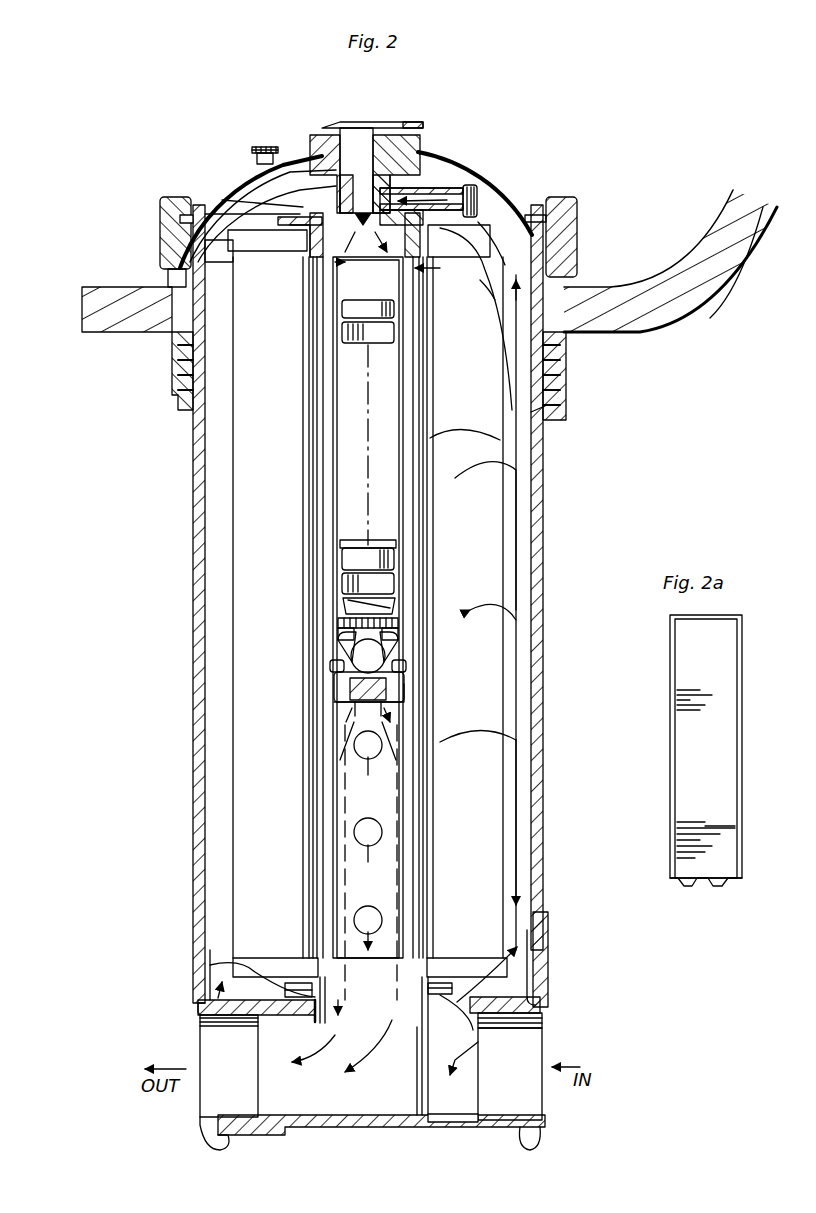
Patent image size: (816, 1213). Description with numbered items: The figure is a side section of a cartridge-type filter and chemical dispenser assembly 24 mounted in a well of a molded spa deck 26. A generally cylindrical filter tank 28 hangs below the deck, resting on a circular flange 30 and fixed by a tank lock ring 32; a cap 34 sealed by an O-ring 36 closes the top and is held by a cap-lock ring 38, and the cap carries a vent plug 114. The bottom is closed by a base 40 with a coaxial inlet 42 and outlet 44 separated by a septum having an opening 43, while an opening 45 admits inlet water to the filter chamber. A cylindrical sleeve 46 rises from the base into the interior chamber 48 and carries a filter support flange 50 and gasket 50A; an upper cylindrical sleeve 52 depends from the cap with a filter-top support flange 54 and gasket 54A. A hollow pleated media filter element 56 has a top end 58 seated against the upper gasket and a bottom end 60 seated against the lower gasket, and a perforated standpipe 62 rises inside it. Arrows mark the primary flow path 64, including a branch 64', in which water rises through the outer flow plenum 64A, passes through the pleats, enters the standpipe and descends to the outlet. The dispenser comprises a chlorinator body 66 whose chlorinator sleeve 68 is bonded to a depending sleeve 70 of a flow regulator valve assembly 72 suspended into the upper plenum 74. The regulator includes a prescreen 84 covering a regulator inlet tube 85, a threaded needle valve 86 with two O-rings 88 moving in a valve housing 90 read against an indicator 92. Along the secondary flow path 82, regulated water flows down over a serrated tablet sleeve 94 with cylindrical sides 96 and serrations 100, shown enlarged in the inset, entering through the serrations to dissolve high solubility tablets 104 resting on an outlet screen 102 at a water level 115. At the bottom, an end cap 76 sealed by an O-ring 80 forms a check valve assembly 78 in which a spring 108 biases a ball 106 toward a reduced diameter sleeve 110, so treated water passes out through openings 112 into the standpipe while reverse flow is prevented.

In FIG. 2, the cartridge-type filter and chemical dispenser assembly 24 is at (178, 758).
In FIG. 2, the molded spa deck 26 is at (722, 236).
In FIG. 2, the filter tank 28 is at (543, 522).
In FIG. 2, the circular flange 30 is at (172, 288).
In FIG. 2, the tank lock ring 32 is at (172, 352).
In FIG. 2, the cap 34 is at (316, 150).
In FIG. 2, the O-ring 36 is at (556, 232).
In FIG. 2, the cap-lock ring 38 is at (160, 230).
In FIG. 2, the base 40 is at (548, 945).
In FIG. 2, the inlet 42 is at (542, 1108).
In FIG. 2, the opening 43 is at (417, 1092).
In FIG. 2, the outlet 44 is at (212, 1088).
In FIG. 2, the opening 45 is at (542, 1022).
In FIG. 2, the circularly cylindrical sleeve 46 is at (315, 945).
In FIG. 2, the interior chamber 48 is at (212, 800).
In FIG. 2, the filter support flange 50 is at (468, 1015).
In FIG. 2, the gasket 50A is at (440, 978).
In FIG. 2, the upper circular cylindrical sleeve 52 is at (305, 262).
In FIG. 2, the filter-top support flange 54 is at (290, 206).
In FIG. 2, the gasket 54A is at (215, 256).
In FIG. 2, the pleated media filter element 56 is at (503, 840).
In FIG. 2, the top end 58 is at (292, 254).
In FIG. 2, the bottom end 60 is at (235, 968).
In FIG. 2, the standpipe 62 is at (420, 882).
In FIG. 2, the primary flow path 64 is at (399, 667).
In FIG. 2, the flow passage 64' is at (459, 304).
In FIG. 2, the outer flow plenum 64A is at (548, 410).
In FIG. 2, the chlorinator body 66 is at (442, 267).
In FIG. 2, the chlorinator sleeve 68 is at (408, 395).
In FIG. 2, the depending sleeve 70 is at (228, 192).
In FIG. 2, the flow regulator valve assembly 72 is at (428, 190).
In FIG. 2, the upper plenum 74 is at (480, 205).
In FIG. 2, the end cap 76 is at (350, 685).
In FIG. 2, the check valve assembly 78 is at (400, 658).
In FIG. 2, the O-ring 80 is at (406, 670).
In FIG. 2, the secondary flow path 82 is at (283, 768).
In FIG. 2, the water treatment prescreen 84 is at (470, 180).
In FIG. 2, the regulator inlet tube 85 is at (452, 185).
In FIG. 2, the chemical regulator needle valve 86 is at (408, 122).
In FIG. 2, the O-rings 88 is at (358, 124).
In FIG. 2, the valve housing 90 is at (252, 186).
In FIG. 2, the indicator 92 is at (324, 124).
In FIG. 2, the serrated tablet sleeve 94 is at (390, 420).
In FIG. 2A, the serrated tablet sleeve 94 is at (667, 718).
In FIG. 2A, the cylindrical sides 96 is at (742, 760).
In FIG. 2A, the serrations 100 is at (695, 884).
In FIG. 2, the outlet screen 102 is at (338, 626).
In FIG. 2, the high solubility tablets 104 is at (395, 555).
In FIG. 2, the ball 106 is at (378, 608).
In FIG. 2, the spring 108 is at (398, 696).
In FIG. 2, the reduced diameter sleeve 110 is at (346, 655).
In FIG. 2, the openings 112 is at (360, 695).
In FIG. 2, the vent plug 114 is at (265, 146).
In FIG. 2, the water level 115 is at (375, 612).